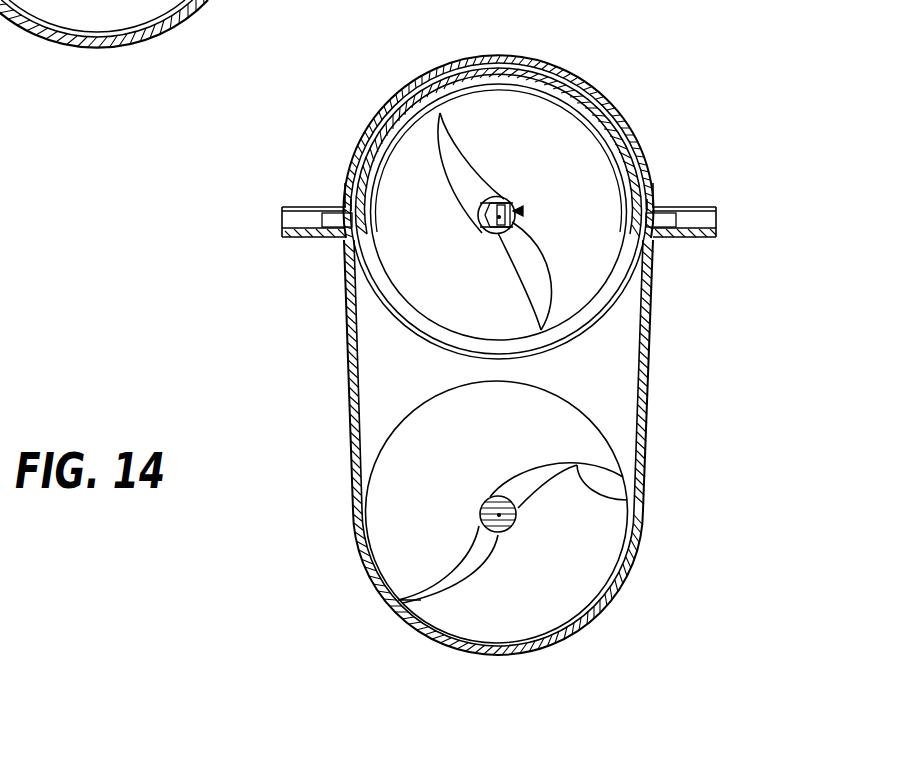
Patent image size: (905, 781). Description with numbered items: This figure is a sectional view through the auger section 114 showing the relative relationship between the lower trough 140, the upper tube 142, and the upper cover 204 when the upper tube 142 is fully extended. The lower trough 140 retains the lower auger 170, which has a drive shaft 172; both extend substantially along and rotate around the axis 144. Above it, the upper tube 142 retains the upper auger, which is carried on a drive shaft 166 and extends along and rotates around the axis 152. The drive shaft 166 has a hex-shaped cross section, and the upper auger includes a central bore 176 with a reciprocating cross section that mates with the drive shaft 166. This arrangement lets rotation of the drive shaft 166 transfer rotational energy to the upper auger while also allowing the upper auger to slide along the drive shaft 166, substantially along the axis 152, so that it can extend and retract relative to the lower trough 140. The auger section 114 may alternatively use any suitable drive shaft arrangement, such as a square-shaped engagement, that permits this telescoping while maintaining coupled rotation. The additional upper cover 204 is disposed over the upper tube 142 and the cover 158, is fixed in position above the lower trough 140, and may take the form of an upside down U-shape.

The auger section 114 is at (186, 346).
The lower trough 140 is at (348, 382).
The upper tube 142 is at (607, 311).
The axis 144 is at (500, 516).
The axis 152 is at (513, 270).
The cover 158 is at (608, 130).
The drive shaft 166 is at (500, 216).
The lower auger 170 is at (607, 521).
The drive shaft 172 is at (481, 505).
The central bore 176 is at (523, 211).
The upper cover 204 is at (557, 68).